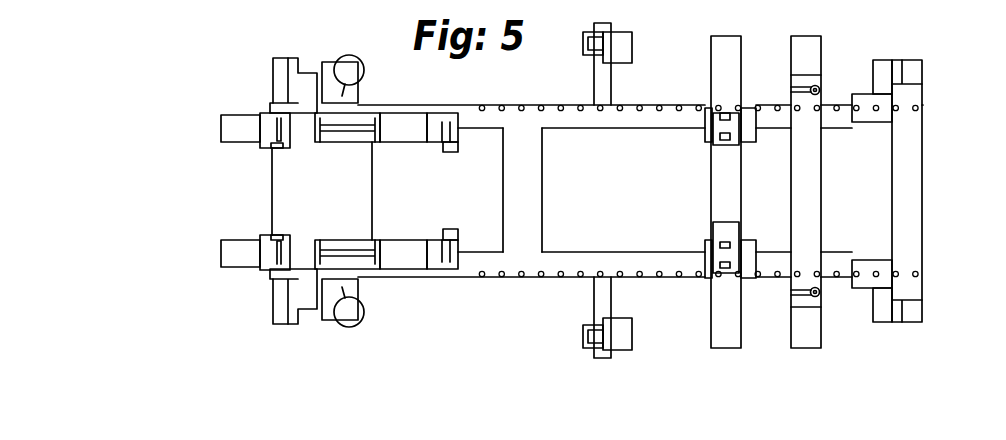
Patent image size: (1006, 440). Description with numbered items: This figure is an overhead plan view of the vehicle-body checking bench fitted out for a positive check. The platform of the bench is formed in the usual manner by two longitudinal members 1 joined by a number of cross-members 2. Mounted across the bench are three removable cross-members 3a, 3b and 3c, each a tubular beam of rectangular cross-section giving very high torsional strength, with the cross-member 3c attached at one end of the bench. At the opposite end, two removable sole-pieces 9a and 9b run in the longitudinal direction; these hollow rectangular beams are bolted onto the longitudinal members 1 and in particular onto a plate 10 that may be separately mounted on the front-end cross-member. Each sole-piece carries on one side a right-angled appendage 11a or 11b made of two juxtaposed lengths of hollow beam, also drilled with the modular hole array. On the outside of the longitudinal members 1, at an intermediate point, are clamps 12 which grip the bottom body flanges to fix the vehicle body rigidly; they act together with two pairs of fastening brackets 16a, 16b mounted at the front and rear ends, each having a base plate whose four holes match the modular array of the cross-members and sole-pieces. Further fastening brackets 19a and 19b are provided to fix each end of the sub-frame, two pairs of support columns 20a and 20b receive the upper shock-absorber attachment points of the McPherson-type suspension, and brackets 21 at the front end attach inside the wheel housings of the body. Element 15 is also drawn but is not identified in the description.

The longitudinal members 1 is at (611, 124).
The cross-members 2 is at (542, 183).
The removable cross-member 3a is at (720, 198).
The removable cross-member 3b is at (808, 182).
The removable cross-member 3c is at (912, 187).
The removable sole-piece 9a is at (405, 141).
The removable sole-piece 9b is at (397, 247).
The plate 10 is at (287, 181).
The appendage 11a is at (292, 82).
The appendage 11b is at (292, 296).
The clamp 12 is at (624, 57).
The post 15 is at (595, 79).
The fastening bracket 16a is at (450, 153).
The fastening bracket 16b is at (450, 228).
The fastening bracket 19a is at (274, 122).
The fastening bracket 19b is at (913, 95).
The support column 20a is at (364, 70).
The support column 20b is at (820, 87).
The bracket 21 is at (346, 131).